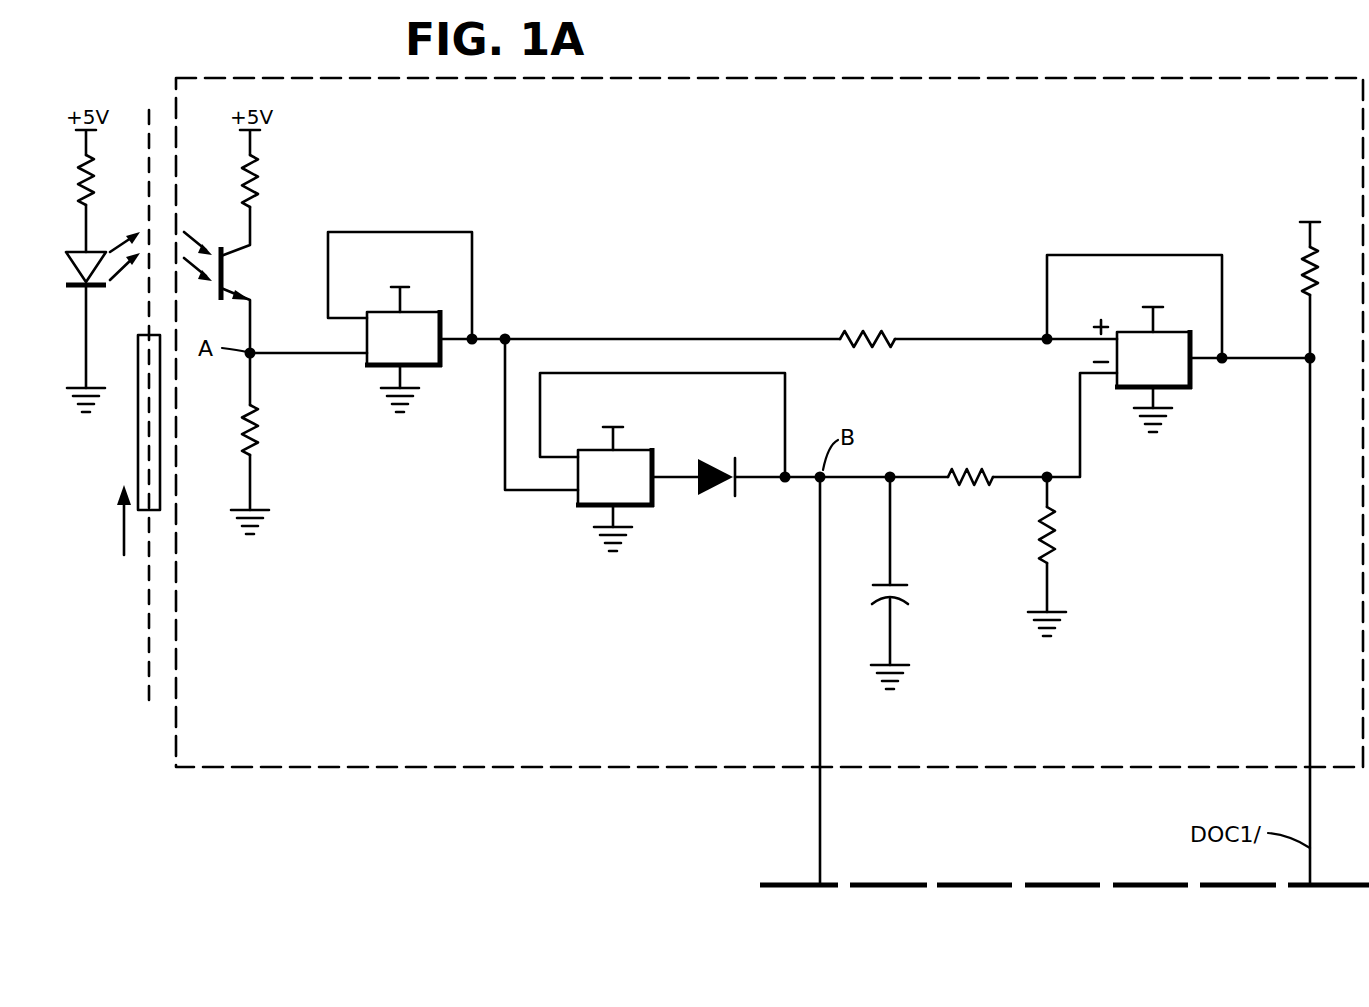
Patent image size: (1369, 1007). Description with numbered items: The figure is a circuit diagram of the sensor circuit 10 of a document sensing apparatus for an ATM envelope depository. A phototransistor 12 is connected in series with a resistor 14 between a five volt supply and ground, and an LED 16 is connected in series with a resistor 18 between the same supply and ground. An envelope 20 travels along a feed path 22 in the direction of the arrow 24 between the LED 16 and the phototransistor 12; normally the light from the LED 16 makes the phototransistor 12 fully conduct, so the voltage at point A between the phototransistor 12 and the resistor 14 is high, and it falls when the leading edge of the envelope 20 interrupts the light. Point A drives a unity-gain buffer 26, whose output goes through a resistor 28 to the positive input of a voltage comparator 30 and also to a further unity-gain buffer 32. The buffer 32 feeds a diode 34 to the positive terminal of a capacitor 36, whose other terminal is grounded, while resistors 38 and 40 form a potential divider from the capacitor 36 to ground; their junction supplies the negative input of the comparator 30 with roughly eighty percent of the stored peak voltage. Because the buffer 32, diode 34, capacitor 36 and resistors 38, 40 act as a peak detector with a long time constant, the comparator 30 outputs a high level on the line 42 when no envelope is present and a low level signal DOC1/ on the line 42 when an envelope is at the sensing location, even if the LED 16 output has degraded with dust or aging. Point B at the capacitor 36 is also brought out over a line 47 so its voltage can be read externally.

The sensor circuit 10 is at (945, 78).
The phototransistor 12 is at (232, 275).
The resistor 14 is at (246, 410).
The LED 16 is at (84, 255).
The resistor 18 is at (82, 162).
The envelope 20 is at (137, 427).
The feed path 22 is at (147, 648).
The arrow 24 is at (123, 542).
The buffer 26 is at (370, 370).
The resistor 28 is at (852, 330).
The voltage comparator 30 is at (1192, 392).
The buffer 32 is at (578, 508).
The diode 34 is at (704, 460).
The capacitor 36 is at (907, 597).
The resistor 38 is at (957, 470).
The resistor 40 is at (1057, 540).
The line 42 is at (1292, 355).
The line 47 is at (822, 835).